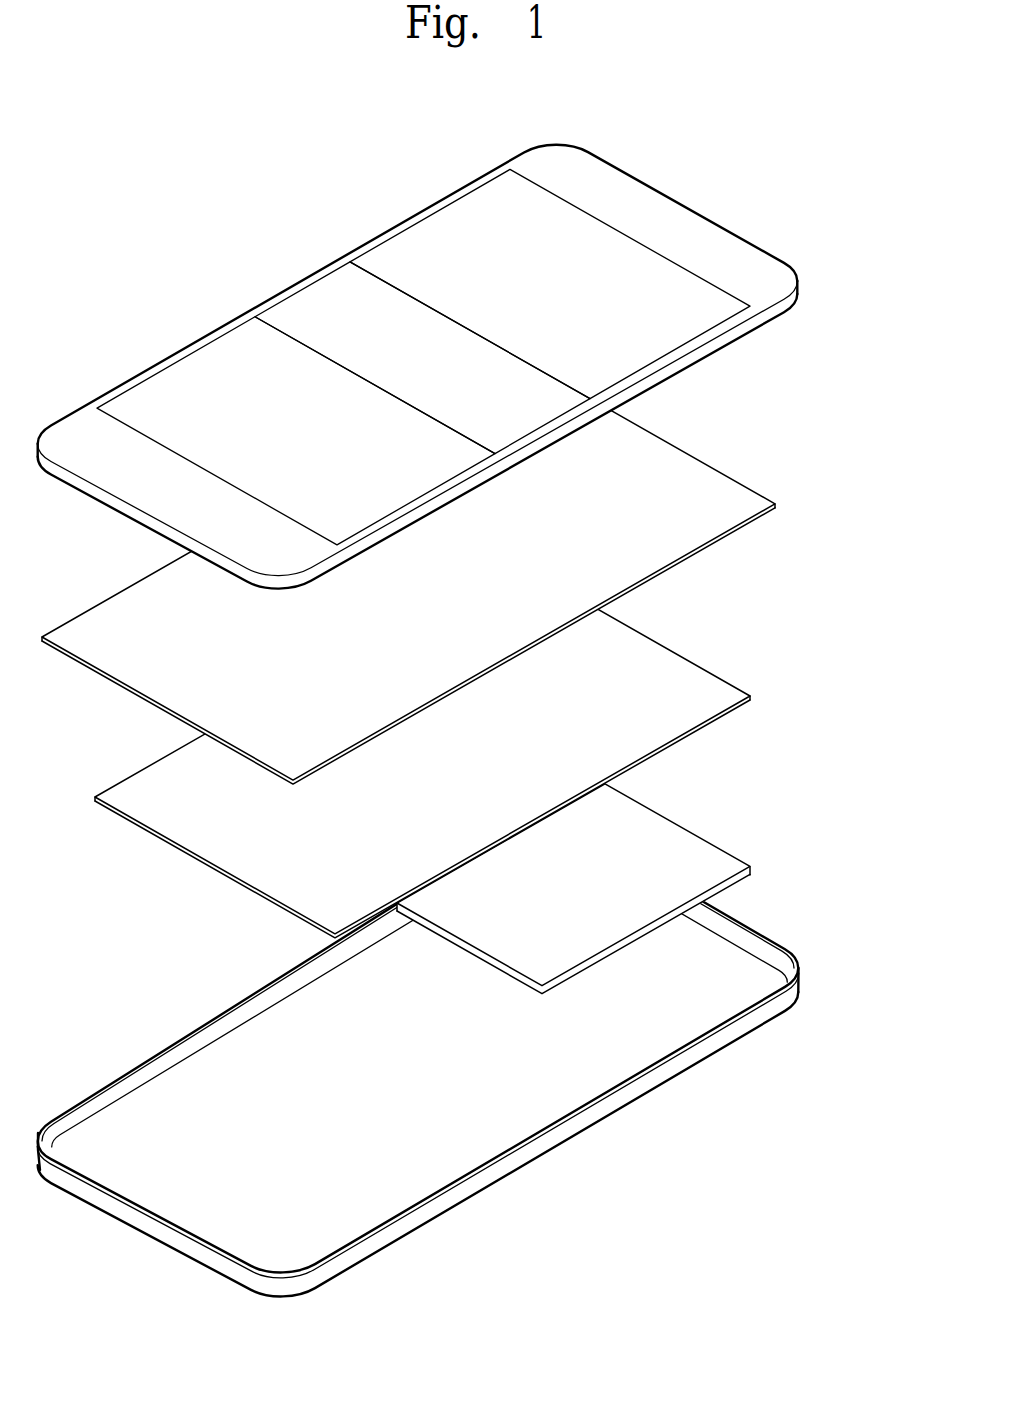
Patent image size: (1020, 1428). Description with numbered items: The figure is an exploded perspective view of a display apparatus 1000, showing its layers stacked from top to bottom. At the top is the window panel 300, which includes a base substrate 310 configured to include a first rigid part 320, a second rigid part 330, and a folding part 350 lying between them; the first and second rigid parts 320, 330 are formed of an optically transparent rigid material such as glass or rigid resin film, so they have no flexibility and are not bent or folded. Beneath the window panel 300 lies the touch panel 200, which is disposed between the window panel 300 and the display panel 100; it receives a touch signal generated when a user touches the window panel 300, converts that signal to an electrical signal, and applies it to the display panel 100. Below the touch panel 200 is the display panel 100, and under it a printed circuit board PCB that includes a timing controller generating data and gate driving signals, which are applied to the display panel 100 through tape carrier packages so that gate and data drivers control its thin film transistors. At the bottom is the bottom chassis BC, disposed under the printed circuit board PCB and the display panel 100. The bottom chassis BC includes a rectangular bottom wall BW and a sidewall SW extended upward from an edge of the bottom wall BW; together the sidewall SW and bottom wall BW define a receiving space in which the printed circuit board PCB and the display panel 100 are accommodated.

The display apparatus 1000 is at (467, 681).
The window panel 300 is at (418, 367).
The base substrate 310 is at (343, 357).
The first rigid part 320 is at (248, 347).
The folding part 350 is at (422, 336).
The second rigid part 330 is at (388, 263).
The touch panel 200 is at (673, 481).
The display panel 100 is at (673, 686).
The printed circuit board PCB is at (673, 851).
The bottom chassis BC is at (467, 1058).
The bottom wall BW is at (726, 968).
The sidewall SW is at (787, 1002).